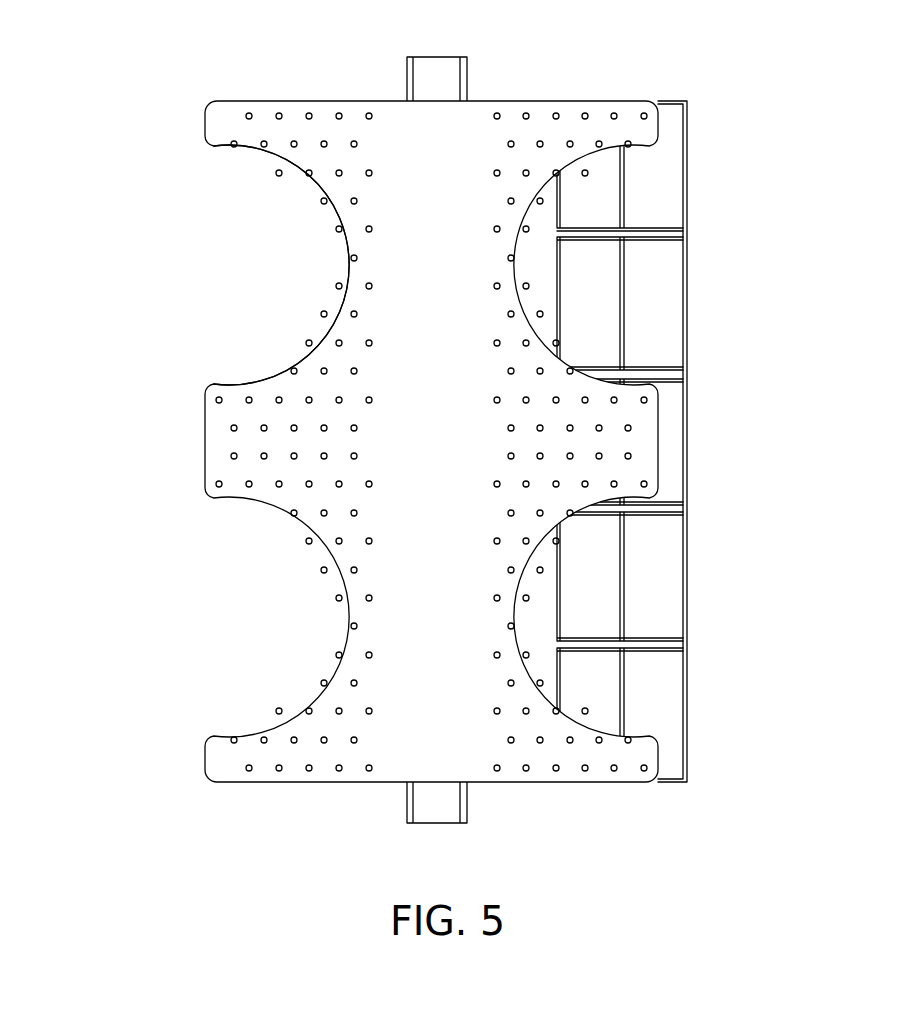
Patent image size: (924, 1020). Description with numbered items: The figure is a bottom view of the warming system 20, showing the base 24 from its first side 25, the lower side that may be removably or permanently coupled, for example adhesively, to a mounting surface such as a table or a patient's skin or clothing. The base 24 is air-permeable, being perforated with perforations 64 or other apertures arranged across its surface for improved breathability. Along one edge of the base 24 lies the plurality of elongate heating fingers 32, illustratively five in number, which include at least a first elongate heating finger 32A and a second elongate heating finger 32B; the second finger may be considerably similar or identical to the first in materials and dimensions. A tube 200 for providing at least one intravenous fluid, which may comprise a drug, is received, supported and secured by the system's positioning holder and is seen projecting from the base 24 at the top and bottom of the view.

The warming system 20 is at (470, 451).
The base 24 is at (347, 429).
The first side 25 is at (325, 328).
The elongate heating fingers 32 is at (730, 441).
The first elongate heating finger 32A is at (667, 165).
The second elongate heating finger 32B is at (675, 740).
The perforations 64 is at (300, 682).
The tube 200 is at (437, 797).